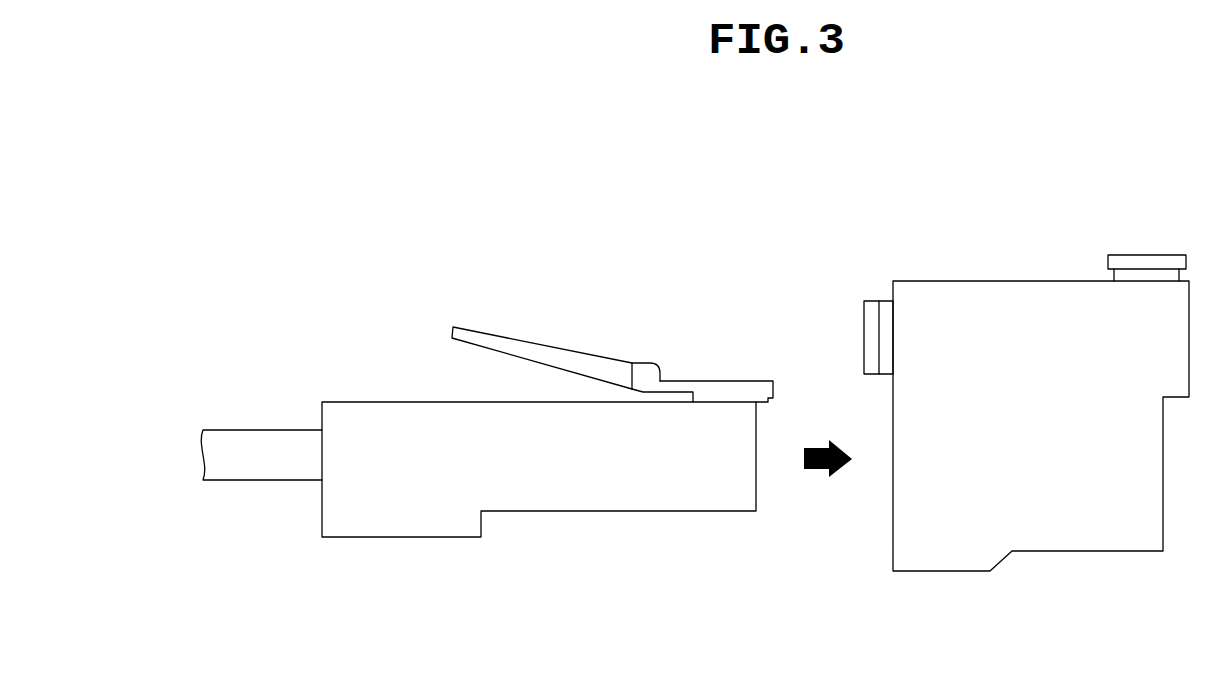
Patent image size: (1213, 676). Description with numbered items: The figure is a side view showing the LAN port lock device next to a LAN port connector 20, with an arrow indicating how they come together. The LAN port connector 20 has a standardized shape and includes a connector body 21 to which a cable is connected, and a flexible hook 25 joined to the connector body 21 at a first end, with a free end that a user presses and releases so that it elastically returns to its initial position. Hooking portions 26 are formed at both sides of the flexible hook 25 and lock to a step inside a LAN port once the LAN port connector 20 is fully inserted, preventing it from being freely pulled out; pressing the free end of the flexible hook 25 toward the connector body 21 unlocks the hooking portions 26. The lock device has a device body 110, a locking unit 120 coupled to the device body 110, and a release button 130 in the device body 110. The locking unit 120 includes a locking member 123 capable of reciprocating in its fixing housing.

The LAN port connector 20 is at (547, 426).
The connector body 21 is at (636, 502).
The flexible hook 25 is at (549, 347).
The hooking portions 26 is at (632, 375).
The device body 110 is at (1022, 264).
The locking unit 120 is at (841, 296).
The locking member 123 is at (868, 322).
The release button 130 is at (1150, 260).